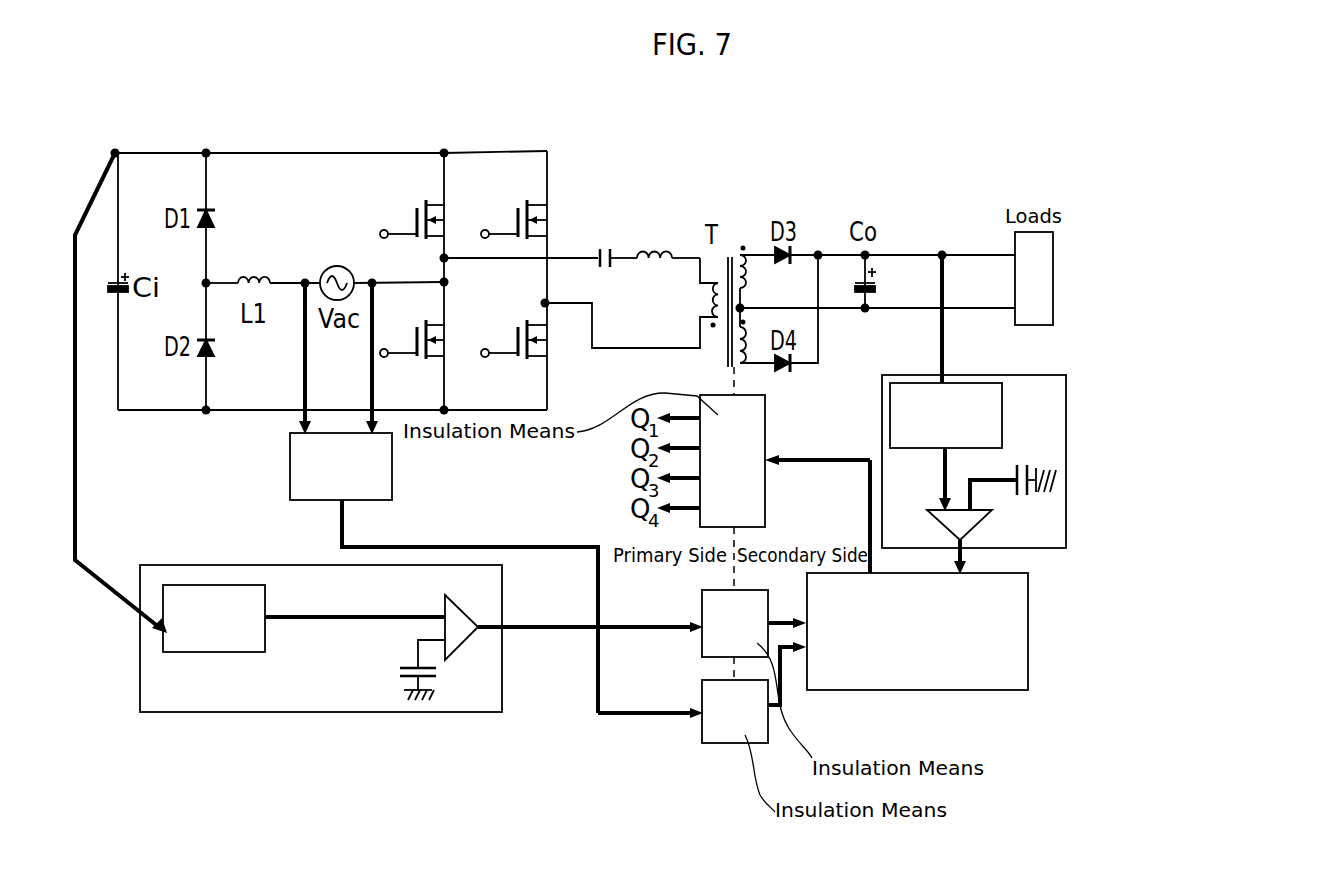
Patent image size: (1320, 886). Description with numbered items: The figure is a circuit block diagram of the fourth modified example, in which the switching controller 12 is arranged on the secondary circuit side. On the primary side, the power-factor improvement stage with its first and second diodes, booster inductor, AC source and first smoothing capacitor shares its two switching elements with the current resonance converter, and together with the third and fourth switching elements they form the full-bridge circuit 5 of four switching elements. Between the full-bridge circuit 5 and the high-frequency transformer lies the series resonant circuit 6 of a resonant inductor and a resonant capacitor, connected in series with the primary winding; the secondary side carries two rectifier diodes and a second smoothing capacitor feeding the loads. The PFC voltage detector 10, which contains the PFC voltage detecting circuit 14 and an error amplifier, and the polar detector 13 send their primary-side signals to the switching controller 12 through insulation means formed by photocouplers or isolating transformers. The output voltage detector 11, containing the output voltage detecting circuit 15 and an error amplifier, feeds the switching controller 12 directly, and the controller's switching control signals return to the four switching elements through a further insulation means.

The full-bridge circuit 5 is at (562, 153).
The series resonant circuit 6 is at (672, 226).
The PFC voltage detector 10 is at (340, 686).
The output voltage detector 11 is at (1094, 436).
The switching controller 12 is at (950, 690).
The polar detector 13 is at (290, 474).
The PFC voltage detecting circuit 14 is at (213, 642).
The output voltage detecting circuit 15 is at (970, 400).